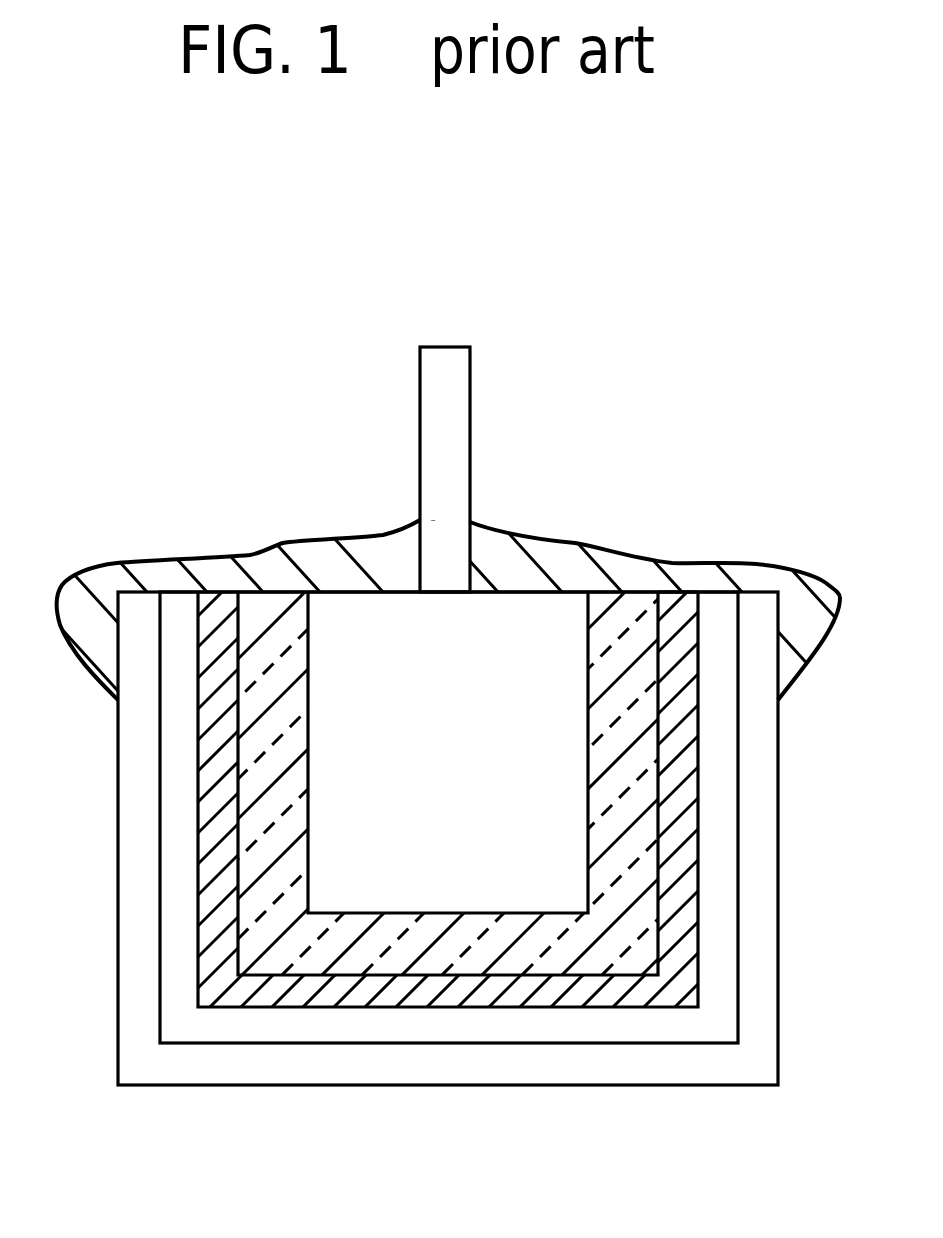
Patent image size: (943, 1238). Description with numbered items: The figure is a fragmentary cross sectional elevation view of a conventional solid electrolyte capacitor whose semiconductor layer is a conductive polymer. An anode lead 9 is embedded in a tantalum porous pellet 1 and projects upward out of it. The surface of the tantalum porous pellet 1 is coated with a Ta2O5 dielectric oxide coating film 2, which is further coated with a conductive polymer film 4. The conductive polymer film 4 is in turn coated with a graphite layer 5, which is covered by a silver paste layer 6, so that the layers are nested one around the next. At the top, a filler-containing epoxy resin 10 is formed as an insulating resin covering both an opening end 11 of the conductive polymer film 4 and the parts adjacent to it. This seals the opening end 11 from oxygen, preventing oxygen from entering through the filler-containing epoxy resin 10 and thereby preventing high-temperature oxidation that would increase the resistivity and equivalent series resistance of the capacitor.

The tantalum porous pellet 1 is at (565, 742).
The dielectric oxide coating film 2 is at (638, 835).
The conductive polymer film 4 is at (680, 935).
The graphite layer 5 is at (357, 1033).
The silver paste layer 6 is at (527, 1073).
The anode lead 9 is at (436, 383).
The filler-containing epoxy resin 10 is at (565, 552).
The opening end 11 is at (683, 592).